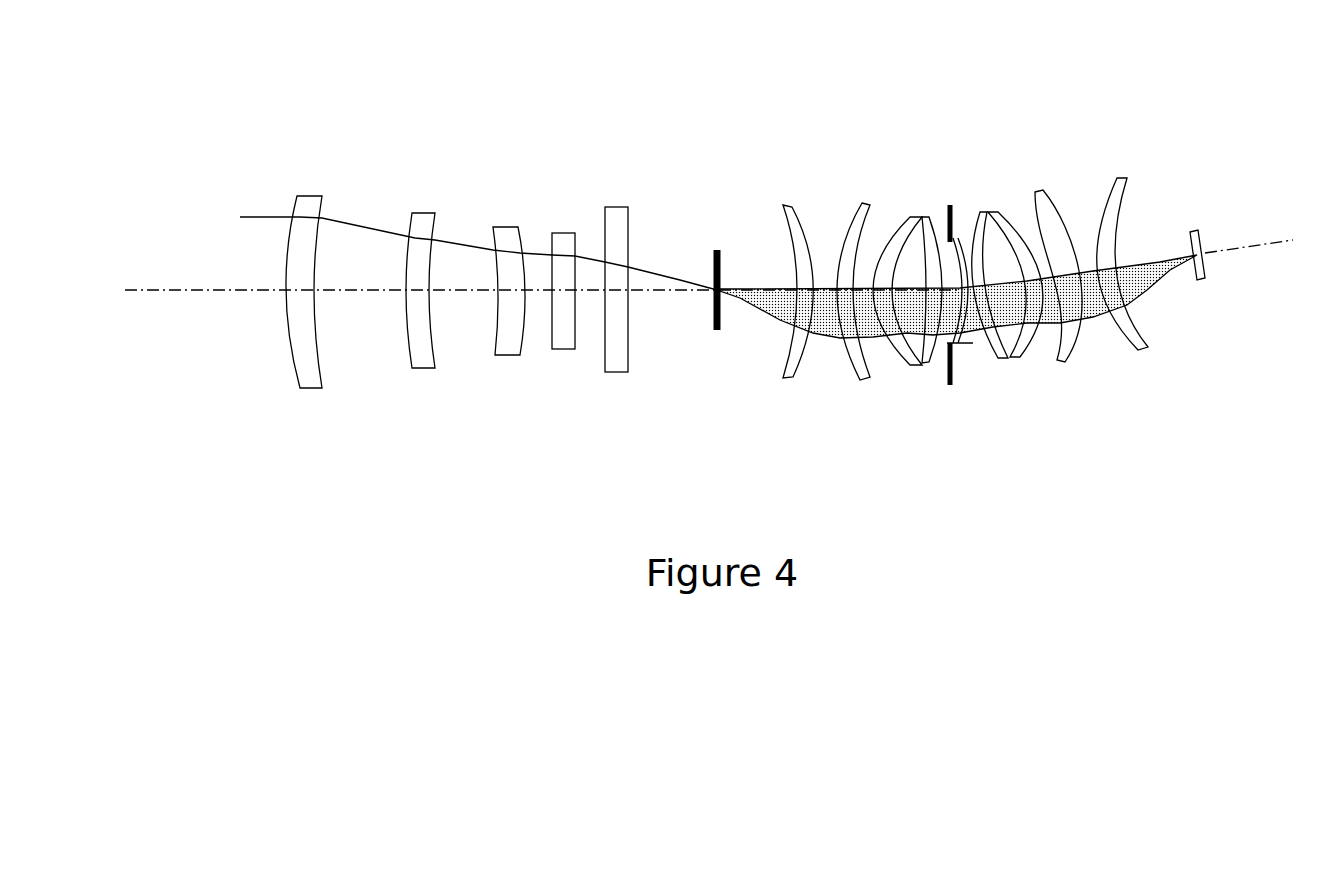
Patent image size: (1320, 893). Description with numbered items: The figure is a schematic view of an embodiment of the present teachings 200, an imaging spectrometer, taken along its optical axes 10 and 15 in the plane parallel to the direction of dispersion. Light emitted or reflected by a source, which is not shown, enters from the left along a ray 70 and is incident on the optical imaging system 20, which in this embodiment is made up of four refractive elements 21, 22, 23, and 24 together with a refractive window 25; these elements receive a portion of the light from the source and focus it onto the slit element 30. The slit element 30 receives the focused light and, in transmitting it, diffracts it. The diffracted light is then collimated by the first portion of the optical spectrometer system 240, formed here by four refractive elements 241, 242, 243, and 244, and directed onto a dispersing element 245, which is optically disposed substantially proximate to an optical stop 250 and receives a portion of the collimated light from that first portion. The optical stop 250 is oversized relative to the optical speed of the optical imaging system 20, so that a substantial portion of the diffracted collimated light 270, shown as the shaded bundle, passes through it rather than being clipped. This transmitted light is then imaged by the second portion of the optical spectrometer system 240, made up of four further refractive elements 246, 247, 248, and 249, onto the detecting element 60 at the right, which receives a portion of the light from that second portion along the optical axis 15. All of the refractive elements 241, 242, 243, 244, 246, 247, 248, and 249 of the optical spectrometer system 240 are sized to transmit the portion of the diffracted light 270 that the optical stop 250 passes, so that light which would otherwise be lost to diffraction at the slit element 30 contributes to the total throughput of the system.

The embodiment of the present teachings 200 is at (203, 146).
The optical axis 10 is at (163, 292).
The optical axis 15 is at (1253, 250).
The chief ray 70 is at (260, 218).
The optical imaging system 20 is at (638, 197).
The refractive element 21 is at (312, 388).
The refractive element 22 is at (423, 370).
The refractive element 23 is at (505, 358).
The refractive element 24 is at (562, 352).
The refractive window 25 is at (615, 373).
The slit element 30 is at (712, 270).
The diffracted collimated light 270 is at (782, 313).
The optical spectrometer system 240 is at (776, 148).
The refractive element 241 is at (788, 203).
The refractive element 242 is at (867, 203).
The refractive element 243 is at (913, 215).
The refractive element 244 is at (927, 215).
The optical stop 250 is at (948, 378).
The dispersing element 245 is at (960, 343).
The refractive element 246 is at (987, 210).
The refractive element 247 is at (995, 208).
The refractive element 248 is at (1033, 193).
The refractive element 249 is at (1120, 187).
The detecting element 60 is at (1202, 243).